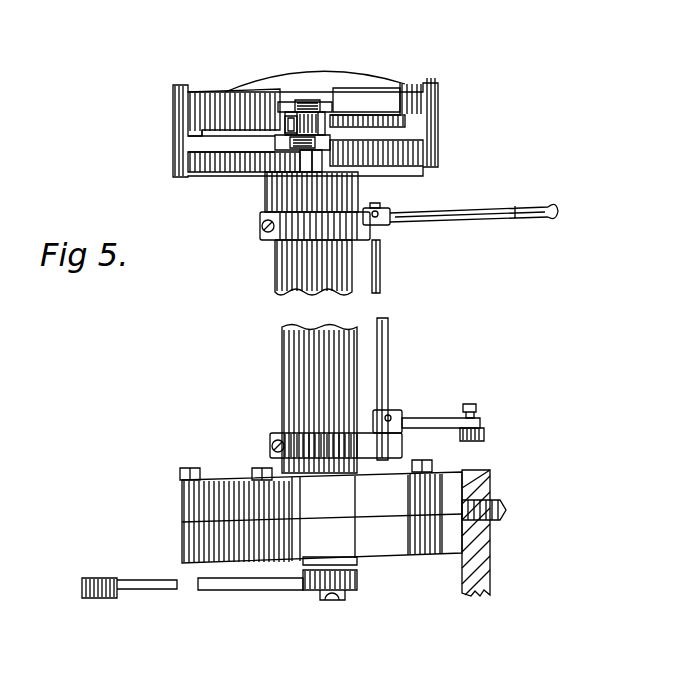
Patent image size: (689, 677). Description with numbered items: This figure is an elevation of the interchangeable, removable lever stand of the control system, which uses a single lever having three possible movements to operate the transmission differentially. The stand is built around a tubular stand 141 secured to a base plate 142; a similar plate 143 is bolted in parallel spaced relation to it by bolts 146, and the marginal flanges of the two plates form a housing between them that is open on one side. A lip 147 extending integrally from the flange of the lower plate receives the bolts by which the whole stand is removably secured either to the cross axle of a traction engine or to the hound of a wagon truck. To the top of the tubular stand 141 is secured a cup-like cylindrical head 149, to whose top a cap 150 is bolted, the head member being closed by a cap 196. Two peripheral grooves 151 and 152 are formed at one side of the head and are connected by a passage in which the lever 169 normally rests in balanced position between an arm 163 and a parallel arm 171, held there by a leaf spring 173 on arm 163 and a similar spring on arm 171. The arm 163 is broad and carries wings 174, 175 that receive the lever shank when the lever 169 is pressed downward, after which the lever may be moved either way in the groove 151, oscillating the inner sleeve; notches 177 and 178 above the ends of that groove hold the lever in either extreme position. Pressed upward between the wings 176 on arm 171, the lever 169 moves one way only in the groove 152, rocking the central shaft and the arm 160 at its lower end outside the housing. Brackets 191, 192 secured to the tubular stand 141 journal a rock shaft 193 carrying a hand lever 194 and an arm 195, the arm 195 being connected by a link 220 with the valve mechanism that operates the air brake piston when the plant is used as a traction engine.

The tubular stand 141 is at (298, 378).
The base plate 142 is at (182, 505).
The plate 143 is at (385, 555).
The bolts 146 is at (190, 468).
The lip 147 is at (455, 488).
The cup-like cylindrical head 149 is at (200, 107).
The cap 150 is at (408, 84).
The peripheral groove 151 is at (395, 144).
The peripheral groove 152 is at (362, 103).
The arm 160 is at (238, 590).
The arm 163 is at (300, 150).
The lever 169 is at (270, 128).
The arm 171 is at (297, 102).
The leaf spring 173 is at (305, 152).
The wing 174 is at (335, 143).
The wing 175 is at (283, 145).
The wings 176 is at (337, 103).
The notch 177 is at (408, 120).
The notch 178 is at (193, 133).
The bracket 191 is at (403, 440).
The bracket 192 is at (358, 240).
The rock shaft 193 is at (390, 340).
The hand lever 194 is at (455, 222).
The arm 195 is at (422, 417).
The cap 196 is at (282, 82).
The link 220 is at (485, 432).